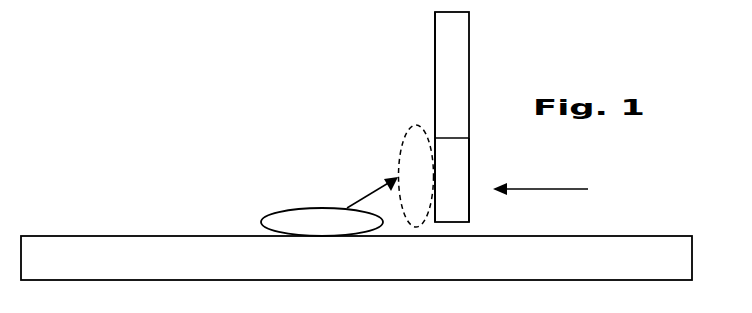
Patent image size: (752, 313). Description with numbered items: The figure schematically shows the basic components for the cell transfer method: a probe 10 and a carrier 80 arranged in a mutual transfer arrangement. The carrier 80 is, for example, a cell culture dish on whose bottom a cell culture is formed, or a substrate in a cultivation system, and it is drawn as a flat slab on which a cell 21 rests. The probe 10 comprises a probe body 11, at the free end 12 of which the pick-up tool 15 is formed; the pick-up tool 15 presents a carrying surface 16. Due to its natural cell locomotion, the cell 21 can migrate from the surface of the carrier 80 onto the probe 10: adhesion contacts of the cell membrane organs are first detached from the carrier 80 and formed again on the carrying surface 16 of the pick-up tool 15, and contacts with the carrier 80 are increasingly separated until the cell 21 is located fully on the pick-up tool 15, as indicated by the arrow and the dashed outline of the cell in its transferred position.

The probe 10 is at (517, 60).
The probe body 11 is at (435, 97).
The free end 12 is at (615, 198).
The pick-up tool 15 is at (469, 203).
The carrying surface 16 is at (435, 188).
The cell 21 is at (270, 220).
The carrier 80 is at (682, 268).